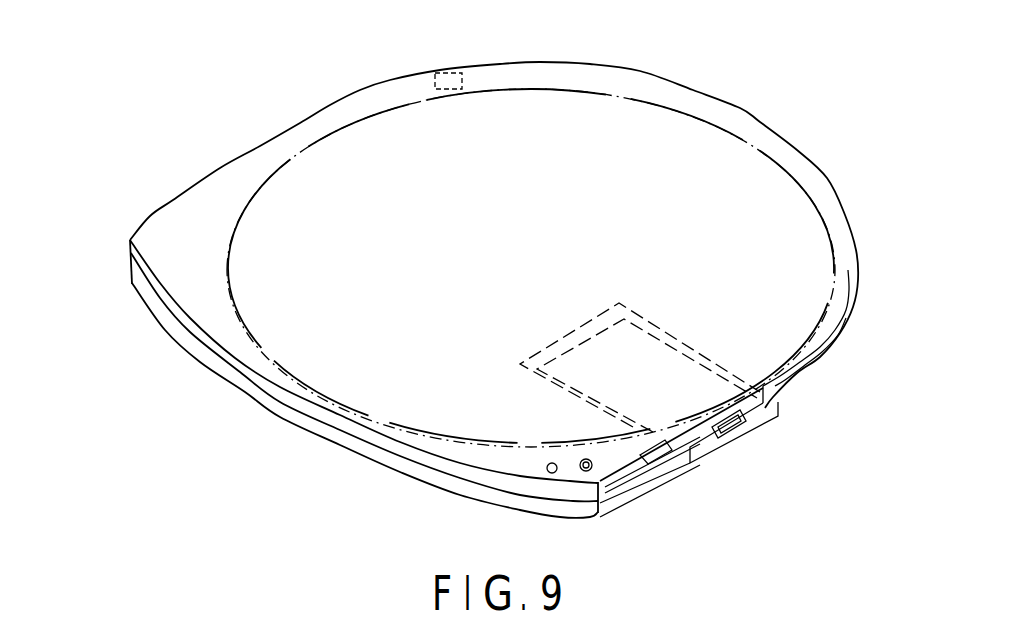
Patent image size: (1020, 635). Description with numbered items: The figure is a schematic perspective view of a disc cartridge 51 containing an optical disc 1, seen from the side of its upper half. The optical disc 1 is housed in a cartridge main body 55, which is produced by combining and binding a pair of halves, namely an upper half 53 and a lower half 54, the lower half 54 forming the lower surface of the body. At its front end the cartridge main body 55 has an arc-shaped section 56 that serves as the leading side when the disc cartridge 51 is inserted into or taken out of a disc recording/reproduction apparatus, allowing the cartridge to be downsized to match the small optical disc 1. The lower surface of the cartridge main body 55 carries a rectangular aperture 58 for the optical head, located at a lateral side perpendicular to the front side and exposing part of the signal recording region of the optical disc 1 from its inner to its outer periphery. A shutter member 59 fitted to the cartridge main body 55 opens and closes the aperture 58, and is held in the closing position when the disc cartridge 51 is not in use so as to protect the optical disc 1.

The optical disc 1 is at (499, 105).
The disc cartridge 51 is at (358, 92).
The upper half 53 is at (130, 255).
The lower half 54 is at (131, 285).
The cartridge main body 55 is at (78, 262).
The arc-shaped section 56 is at (694, 90).
The aperture for the optical head 58 is at (680, 350).
The shutter member 59 is at (760, 412).